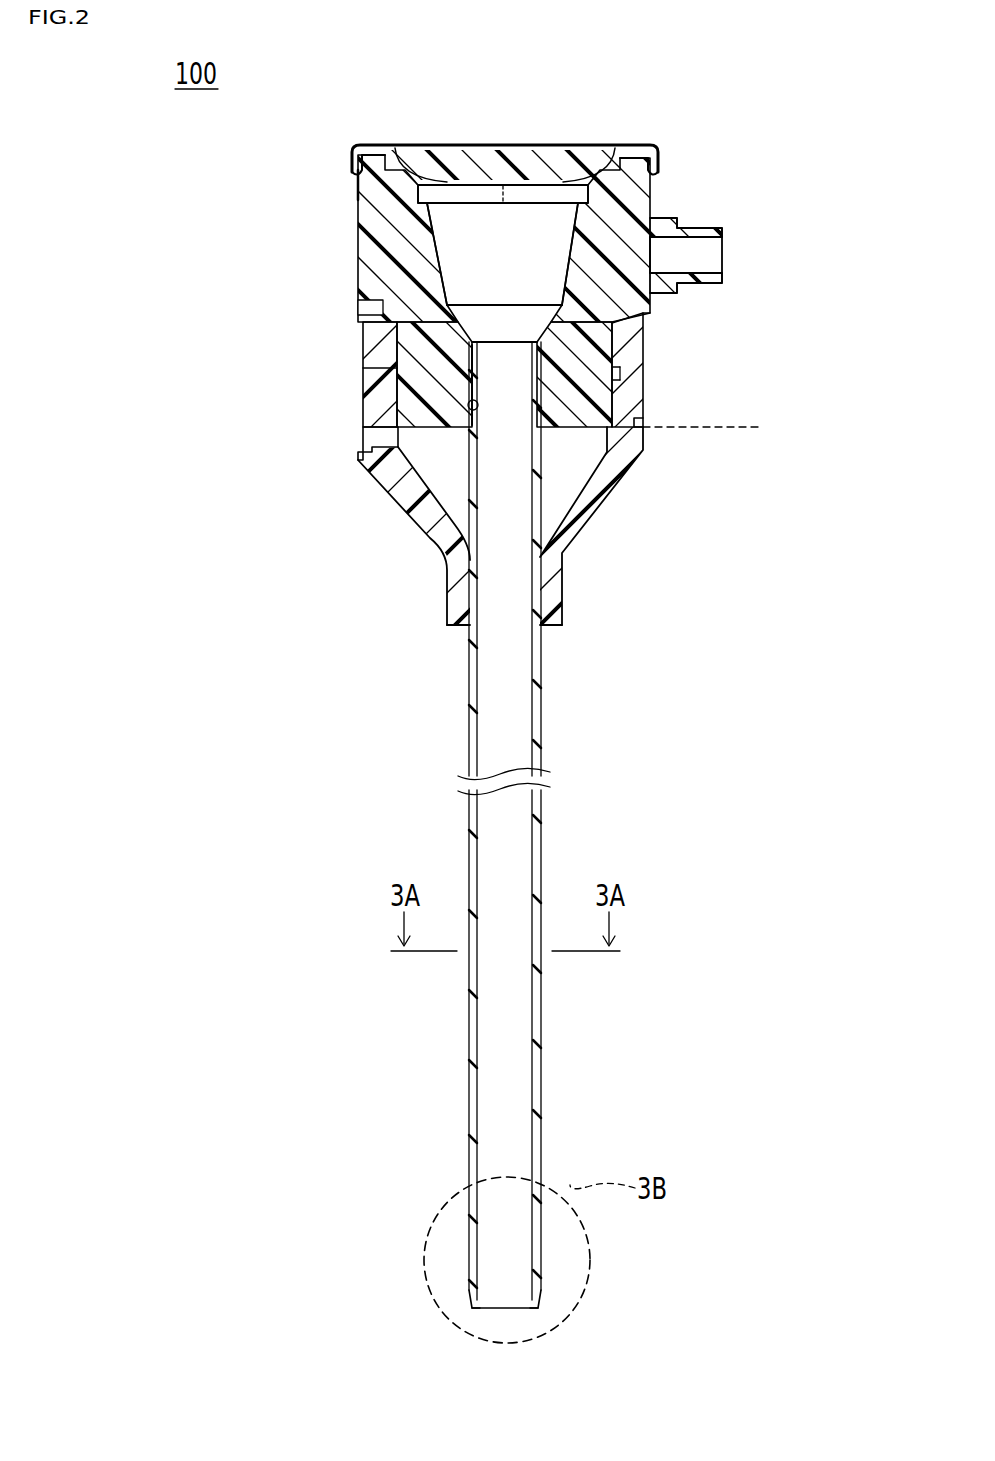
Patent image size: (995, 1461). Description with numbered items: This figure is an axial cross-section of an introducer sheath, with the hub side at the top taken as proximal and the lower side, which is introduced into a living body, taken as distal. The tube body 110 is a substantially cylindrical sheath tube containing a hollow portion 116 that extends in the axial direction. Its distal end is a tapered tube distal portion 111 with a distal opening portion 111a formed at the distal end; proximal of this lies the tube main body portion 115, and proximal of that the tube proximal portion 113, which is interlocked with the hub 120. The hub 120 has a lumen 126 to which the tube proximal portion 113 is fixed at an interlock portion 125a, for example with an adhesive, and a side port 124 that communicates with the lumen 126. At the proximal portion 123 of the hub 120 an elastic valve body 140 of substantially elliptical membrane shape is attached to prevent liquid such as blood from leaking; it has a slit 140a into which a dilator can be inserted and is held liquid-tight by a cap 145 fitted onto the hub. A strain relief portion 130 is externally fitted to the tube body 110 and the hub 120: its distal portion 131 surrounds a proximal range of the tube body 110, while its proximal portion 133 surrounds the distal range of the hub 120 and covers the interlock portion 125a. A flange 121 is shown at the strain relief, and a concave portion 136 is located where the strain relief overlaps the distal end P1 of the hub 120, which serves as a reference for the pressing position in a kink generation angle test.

The tube body 110 is at (520, 846).
The tube distal portion 111 is at (540, 1295).
The distal opening portion 111a is at (508, 1310).
The tube proximal portion 113 is at (472, 358).
The tube main body portion 115 is at (542, 988).
The hollow portion 116 is at (512, 1082).
The hub 120 is at (358, 243).
The flange 121 is at (420, 422).
The proximal portion of the hub 123 is at (358, 183).
The side port 124 is at (680, 246).
The interlock portion 125a is at (462, 350).
The lumen 126 is at (468, 405).
The strain relief portion 130 is at (600, 483).
The distal portion of the strain relief portion 131 is at (553, 607).
The proximal portion of the strain relief portion 133 is at (636, 323).
The concave portion 136 is at (648, 420).
The valve body 140 is at (458, 198).
The slit 140a is at (503, 200).
The cap 145 is at (617, 153).
The distal end of the hub P1 is at (717, 422).